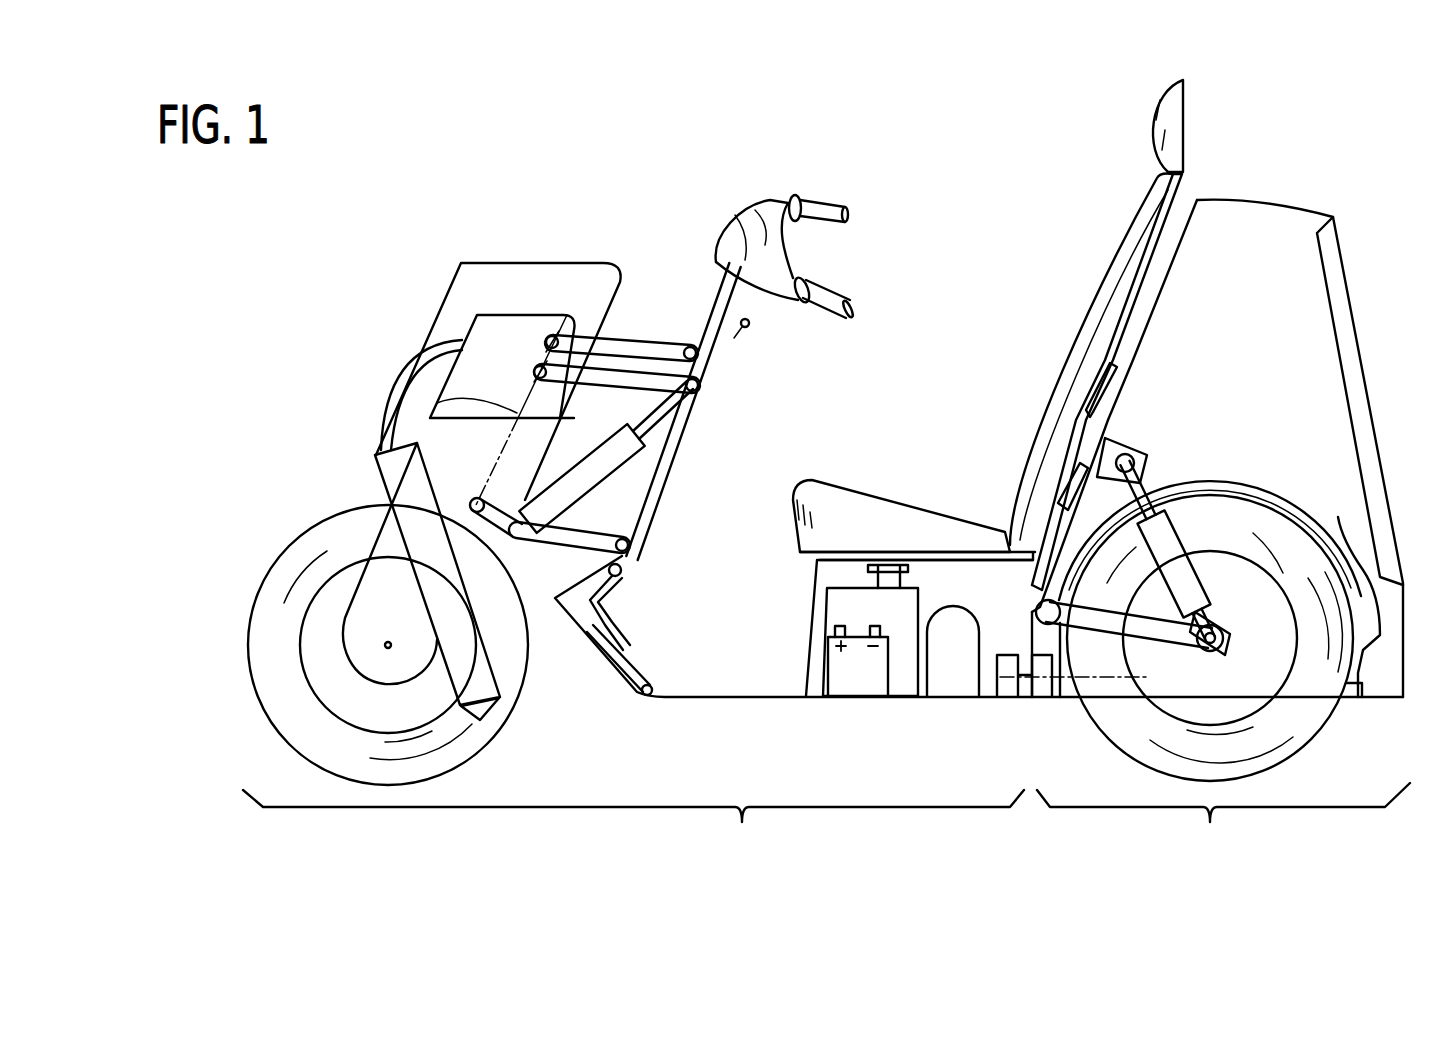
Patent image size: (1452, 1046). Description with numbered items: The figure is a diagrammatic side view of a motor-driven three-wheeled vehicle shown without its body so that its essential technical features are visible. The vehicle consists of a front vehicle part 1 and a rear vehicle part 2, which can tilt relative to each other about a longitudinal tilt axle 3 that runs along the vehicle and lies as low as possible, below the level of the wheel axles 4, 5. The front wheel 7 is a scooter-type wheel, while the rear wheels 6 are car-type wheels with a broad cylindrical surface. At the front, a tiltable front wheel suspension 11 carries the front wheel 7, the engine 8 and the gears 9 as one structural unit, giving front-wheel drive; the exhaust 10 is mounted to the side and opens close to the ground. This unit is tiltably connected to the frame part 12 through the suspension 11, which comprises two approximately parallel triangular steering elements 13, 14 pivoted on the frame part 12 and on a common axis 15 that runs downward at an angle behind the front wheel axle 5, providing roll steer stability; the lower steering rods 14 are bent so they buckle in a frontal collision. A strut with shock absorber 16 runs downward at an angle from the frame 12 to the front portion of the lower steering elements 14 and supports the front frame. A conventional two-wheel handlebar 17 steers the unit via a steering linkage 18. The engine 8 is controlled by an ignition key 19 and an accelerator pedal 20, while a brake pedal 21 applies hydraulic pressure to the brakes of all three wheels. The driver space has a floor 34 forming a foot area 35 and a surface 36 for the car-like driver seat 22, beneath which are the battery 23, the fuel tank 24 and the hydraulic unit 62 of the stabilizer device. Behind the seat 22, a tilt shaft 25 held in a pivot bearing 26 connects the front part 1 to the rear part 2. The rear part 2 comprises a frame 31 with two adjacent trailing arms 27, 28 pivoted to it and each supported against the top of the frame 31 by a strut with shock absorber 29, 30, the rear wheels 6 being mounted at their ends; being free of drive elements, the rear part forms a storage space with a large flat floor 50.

The front vehicle part 1 is at (633, 830).
The rear vehicle part 2 is at (1223, 829).
The tilt axle 3 is at (975, 678).
The rear wheel axle 4 is at (1305, 723).
The front wheel axle 5 is at (388, 645).
The rear wheels 6 is at (1283, 732).
The front wheel 7 is at (268, 633).
The engine 8 is at (541, 285).
The gears 9 is at (500, 357).
The exhaust 10 is at (405, 470).
The front wheel suspension 11 is at (477, 336).
The frame part 12 is at (693, 420).
The upper triangular steering element 13 is at (640, 345).
The lower triangular steering element 14 is at (546, 655).
The axis 15 is at (430, 415).
The strut with shock absorber 16 is at (588, 475).
The handlebar 17 is at (740, 212).
The steering linkage 18 is at (665, 375).
The ignition key 19 is at (750, 325).
The accelerator pedal 20 is at (640, 655).
The brake pedal 21 is at (625, 597).
The driver seat 22 is at (880, 520).
The battery 23 is at (850, 675).
The fuel tank 24 is at (903, 675).
The tilt shaft 25 is at (1040, 690).
The pivot bearing 26 is at (1008, 682).
The trailing arm 27 is at (1142, 707).
The trailing arm 28 is at (1200, 652).
The strut with shock absorber 29 is at (1200, 535).
The strut with shock absorber 30 is at (1168, 550).
The frame 31 is at (1112, 438).
The floor 34 is at (768, 692).
The foot area 35 is at (695, 670).
The surface 36 is at (950, 540).
The flat floor 50 is at (1343, 560).
The hydraulic unit 62 is at (947, 675).